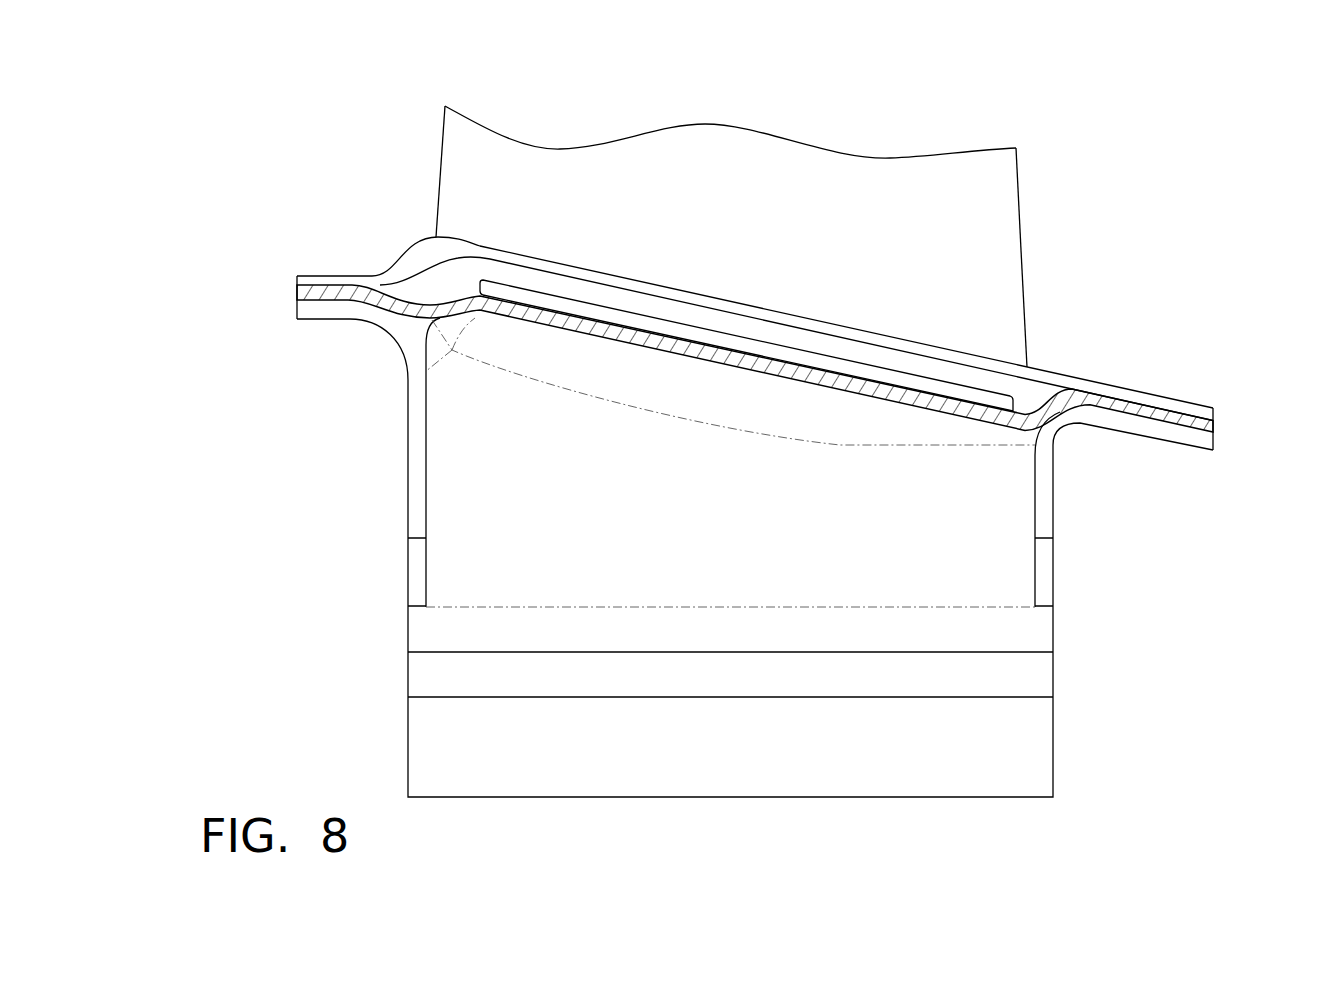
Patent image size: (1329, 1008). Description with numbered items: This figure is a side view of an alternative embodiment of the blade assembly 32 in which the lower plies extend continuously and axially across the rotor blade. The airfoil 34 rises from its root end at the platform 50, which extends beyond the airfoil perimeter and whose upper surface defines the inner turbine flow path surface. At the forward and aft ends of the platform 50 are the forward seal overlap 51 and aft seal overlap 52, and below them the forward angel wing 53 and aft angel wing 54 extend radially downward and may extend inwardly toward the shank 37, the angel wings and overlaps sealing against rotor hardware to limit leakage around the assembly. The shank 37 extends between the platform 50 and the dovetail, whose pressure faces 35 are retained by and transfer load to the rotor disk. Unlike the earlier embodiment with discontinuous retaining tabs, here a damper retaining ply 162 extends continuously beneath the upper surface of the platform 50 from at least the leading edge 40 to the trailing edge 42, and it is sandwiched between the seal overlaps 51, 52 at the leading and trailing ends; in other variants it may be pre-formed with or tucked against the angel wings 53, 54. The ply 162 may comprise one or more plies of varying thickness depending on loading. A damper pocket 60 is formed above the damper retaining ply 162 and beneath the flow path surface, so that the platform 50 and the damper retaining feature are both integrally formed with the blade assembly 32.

The blade assembly 32 is at (1177, 150).
The airfoil 34 is at (1040, 176).
The pressure faces 35 is at (468, 673).
The shank 37 is at (758, 554).
The leading edge 40 is at (432, 168).
The trailing edge 42 is at (1030, 248).
The platform 50 is at (372, 248).
The forward seal overlap 51 is at (292, 268).
The aft seal overlap 52 is at (1165, 371).
The forward angel wing 53 is at (418, 491).
The aft angel wing 54 is at (1042, 518).
The damper pocket 60 is at (491, 290).
The damper retaining ply 162 is at (297, 290).